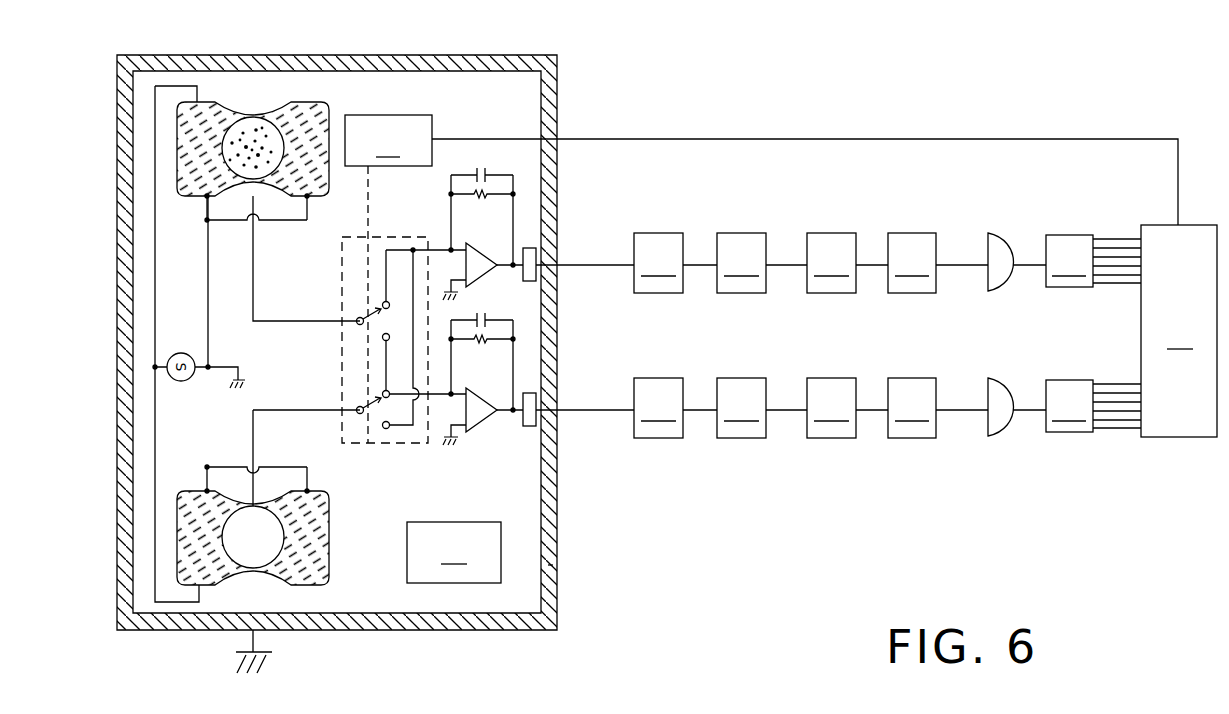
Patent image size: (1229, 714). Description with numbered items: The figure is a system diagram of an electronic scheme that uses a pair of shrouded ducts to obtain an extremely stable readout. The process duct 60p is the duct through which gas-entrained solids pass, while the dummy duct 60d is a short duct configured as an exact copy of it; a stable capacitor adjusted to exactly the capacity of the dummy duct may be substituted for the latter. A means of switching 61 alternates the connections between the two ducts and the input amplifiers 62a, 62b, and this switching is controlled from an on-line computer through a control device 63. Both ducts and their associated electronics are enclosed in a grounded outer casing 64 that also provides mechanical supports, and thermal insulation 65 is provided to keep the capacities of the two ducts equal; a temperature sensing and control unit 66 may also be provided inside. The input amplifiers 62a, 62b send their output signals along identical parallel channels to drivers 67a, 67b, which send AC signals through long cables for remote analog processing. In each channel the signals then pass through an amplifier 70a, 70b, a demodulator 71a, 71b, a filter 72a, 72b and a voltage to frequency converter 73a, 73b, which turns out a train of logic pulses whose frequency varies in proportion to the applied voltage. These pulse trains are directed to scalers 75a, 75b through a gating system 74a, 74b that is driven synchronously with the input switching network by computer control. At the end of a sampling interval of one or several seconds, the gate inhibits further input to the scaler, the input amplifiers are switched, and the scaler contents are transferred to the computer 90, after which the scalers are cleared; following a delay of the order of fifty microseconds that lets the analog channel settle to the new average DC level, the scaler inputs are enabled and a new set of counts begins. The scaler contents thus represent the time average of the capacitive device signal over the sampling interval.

The process duct 60p is at (193, 198).
The dummy duct 60d is at (330, 537).
The means of switching 61 is at (343, 300).
The input amplifier 62a is at (484, 251).
The input amplifier 62b is at (484, 396).
The control device 63 is at (761, 279).
The grounded outer casing 64 is at (553, 503).
The thermal insulation 65 is at (552, 565).
The temperature sensing and control unit 66 is at (454, 552).
The driver 67a is at (528, 247).
The driver 67b is at (529, 428).
The amplifier 70a is at (658, 263).
The demodulator 71a is at (741, 263).
The filter 72a is at (831, 263).
The voltage to frequency converter 73a is at (912, 263).
The gating system 74a is at (1008, 232).
The scaler 75a is at (1093, 261).
The amplifier 70b is at (658, 408).
The demodulator 71b is at (741, 408).
The filter 72b is at (831, 408).
The voltage to frequency converter 73b is at (912, 408).
The gating system 74b is at (1008, 377).
The scaler 75b is at (1093, 406).
The computer 90 is at (1179, 331).